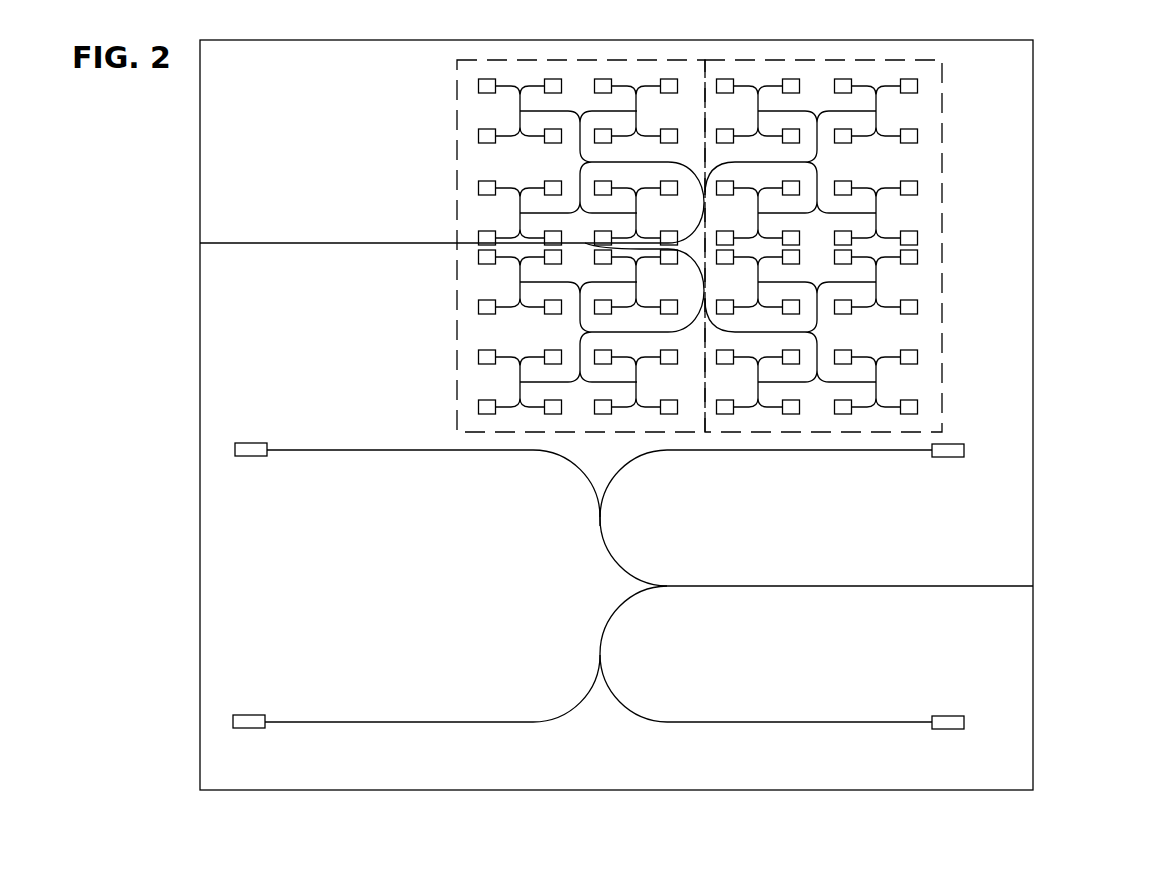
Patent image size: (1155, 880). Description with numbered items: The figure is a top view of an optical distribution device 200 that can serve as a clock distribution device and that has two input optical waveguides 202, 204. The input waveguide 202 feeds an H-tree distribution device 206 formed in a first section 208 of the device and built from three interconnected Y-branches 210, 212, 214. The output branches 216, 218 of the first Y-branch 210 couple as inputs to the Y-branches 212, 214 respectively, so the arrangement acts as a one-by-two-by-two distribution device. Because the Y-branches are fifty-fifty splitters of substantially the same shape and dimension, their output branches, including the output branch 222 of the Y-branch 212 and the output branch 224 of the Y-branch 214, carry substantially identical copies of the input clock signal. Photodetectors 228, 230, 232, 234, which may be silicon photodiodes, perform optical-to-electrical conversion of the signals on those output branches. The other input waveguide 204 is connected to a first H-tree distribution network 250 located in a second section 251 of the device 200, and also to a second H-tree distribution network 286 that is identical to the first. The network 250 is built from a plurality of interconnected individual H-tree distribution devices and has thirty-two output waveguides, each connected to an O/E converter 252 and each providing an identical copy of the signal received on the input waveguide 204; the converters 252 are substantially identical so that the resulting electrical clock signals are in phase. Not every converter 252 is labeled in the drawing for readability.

The distribution device 200 is at (300, 40).
The input optical waveguide 202 is at (350, 451).
The input optical waveguide 204 is at (330, 244).
The H-tree distribution device 206 is at (662, 577).
The first section 208 is at (1005, 667).
The Y-branch 210 is at (619, 589).
The Y-branch 212 is at (564, 476).
The Y-branch 214 is at (600, 710).
The output branch 216 is at (615, 559).
The output branch 218 is at (612, 615).
The output branch 222 is at (872, 452).
The output branch 224 is at (363, 723).
The photodetector 228 is at (250, 457).
The photodetector 230 is at (952, 458).
The photodetector 232 is at (247, 729).
The photodetector 234 is at (950, 730).
The first H-tree distribution network 250 is at (946, 272).
The second section 251 is at (1019, 95).
The O/E converter 252 is at (725, 78).
The second H-tree distribution network 286 is at (455, 107).